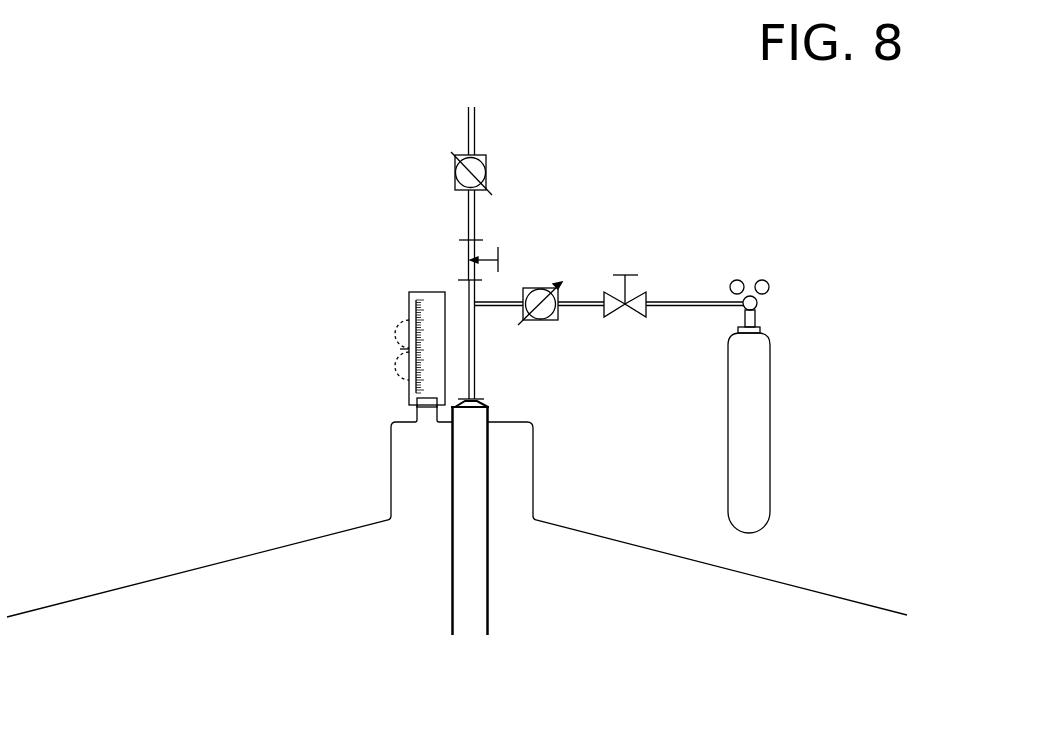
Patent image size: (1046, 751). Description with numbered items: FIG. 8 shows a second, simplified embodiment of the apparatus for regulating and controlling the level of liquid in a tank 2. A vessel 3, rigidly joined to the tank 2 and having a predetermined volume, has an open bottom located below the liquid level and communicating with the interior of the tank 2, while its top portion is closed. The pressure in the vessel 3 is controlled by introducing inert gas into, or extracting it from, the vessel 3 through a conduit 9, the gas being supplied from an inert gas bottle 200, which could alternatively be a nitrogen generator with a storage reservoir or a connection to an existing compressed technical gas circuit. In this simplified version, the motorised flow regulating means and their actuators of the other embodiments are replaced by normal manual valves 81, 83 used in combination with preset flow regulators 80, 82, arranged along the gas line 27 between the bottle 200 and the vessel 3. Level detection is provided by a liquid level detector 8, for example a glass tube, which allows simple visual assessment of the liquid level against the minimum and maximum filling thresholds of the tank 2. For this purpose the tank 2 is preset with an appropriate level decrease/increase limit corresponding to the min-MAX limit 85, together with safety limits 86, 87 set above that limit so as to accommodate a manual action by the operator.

The tank 2 is at (535, 485).
The vessel 3 is at (443, 585).
The liquid level detector 8 is at (422, 290).
The conduit 9 is at (475, 352).
The supply line 27 is at (473, 100).
The preset flow regulator 80 is at (560, 287).
The manual valve 81 is at (645, 272).
The preset flow regulator 82 is at (440, 172).
The manual valve 83 is at (455, 235).
The min-MAX limit 85 is at (400, 349).
The safety limit 86 is at (408, 312).
The safety limit 87 is at (408, 385).
The inert gas bottle 200 is at (770, 420).